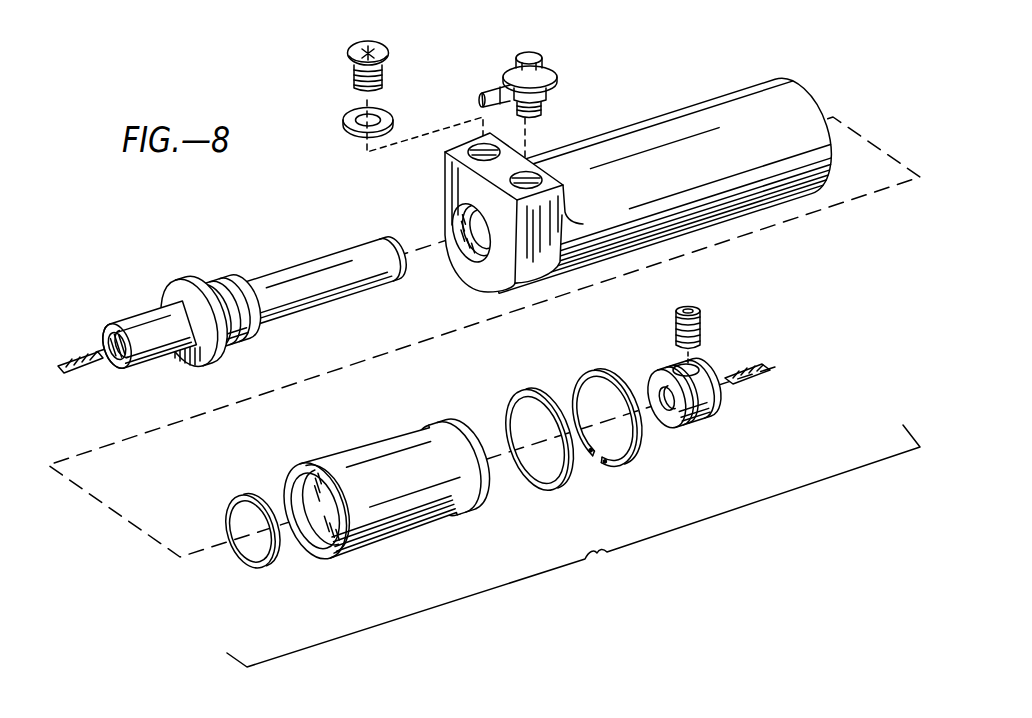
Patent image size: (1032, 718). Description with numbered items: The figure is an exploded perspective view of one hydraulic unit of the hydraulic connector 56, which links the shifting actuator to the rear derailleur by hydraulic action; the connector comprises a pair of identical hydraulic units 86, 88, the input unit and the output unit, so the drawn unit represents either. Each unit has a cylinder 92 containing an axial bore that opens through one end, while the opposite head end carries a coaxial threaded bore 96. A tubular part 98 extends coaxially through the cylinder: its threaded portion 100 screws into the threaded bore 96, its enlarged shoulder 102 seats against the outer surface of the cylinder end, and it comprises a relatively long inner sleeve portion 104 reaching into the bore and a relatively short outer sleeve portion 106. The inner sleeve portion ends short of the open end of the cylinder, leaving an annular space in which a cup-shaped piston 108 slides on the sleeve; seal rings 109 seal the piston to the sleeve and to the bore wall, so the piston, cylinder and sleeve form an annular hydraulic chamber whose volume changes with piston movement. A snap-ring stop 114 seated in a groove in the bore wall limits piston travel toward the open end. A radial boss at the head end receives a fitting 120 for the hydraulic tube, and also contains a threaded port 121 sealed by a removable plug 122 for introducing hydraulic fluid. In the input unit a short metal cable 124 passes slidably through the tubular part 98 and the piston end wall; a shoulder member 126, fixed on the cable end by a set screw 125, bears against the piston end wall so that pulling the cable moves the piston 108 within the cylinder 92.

The hydraulic connector 56 is at (573, 546).
The hydraulic input unit 86 is at (596, 156).
The hydraulic output unit 88 is at (596, 156).
The cylinder 92 is at (690, 105).
The threaded bore 96 is at (446, 222).
The tubular part 98 is at (240, 323).
The threaded portion 100 is at (214, 282).
The enlarged shoulder 102 is at (212, 368).
The inner sleeve portion 104 is at (316, 303).
The outer sleeve portion 106 is at (148, 362).
The cup-shaped piston 108 is at (398, 536).
The seal rings 109 is at (266, 568).
The snap-ring stop 114 is at (620, 468).
The fitting 120 is at (556, 78).
The threaded port 121 is at (470, 137).
The removable plug 122 is at (390, 68).
The metal cable 124 is at (84, 350).
The set screw 125 is at (702, 330).
The shoulder member 126 is at (692, 414).